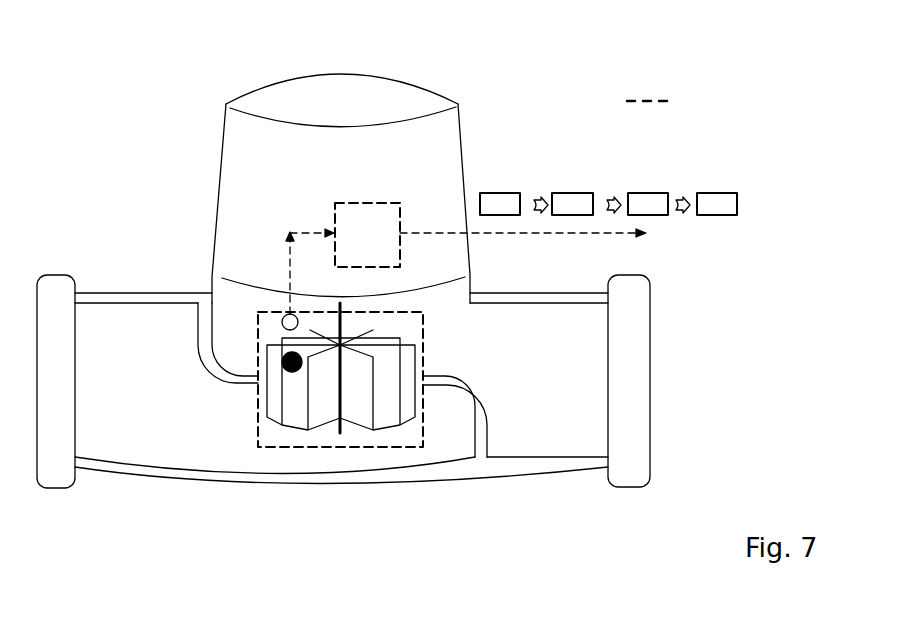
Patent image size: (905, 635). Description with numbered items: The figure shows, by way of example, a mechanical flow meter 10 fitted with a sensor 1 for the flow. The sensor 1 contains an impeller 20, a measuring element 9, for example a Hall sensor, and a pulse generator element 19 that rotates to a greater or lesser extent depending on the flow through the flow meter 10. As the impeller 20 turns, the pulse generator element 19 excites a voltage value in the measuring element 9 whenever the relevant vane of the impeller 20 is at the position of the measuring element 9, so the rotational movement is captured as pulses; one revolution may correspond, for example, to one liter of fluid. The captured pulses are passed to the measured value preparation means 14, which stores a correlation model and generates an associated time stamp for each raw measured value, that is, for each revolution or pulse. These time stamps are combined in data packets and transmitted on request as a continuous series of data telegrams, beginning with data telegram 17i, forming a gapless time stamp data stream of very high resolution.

The mechanical flow meter 10 is at (384, 34).
The sensor 1 is at (282, 448).
The impeller 20 is at (388, 415).
The pulse generator element 19 is at (285, 370).
The measuring element 9 is at (262, 314).
The measured value preparation means 14 is at (352, 213).
The data telegram 17i is at (492, 202).